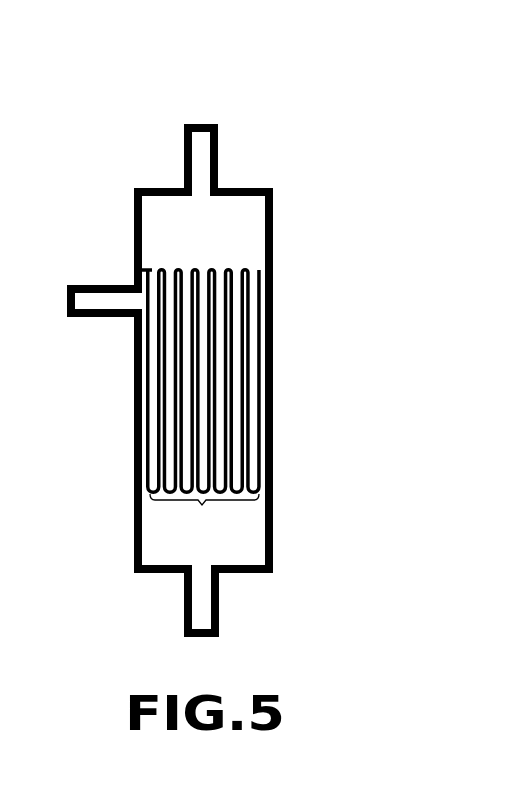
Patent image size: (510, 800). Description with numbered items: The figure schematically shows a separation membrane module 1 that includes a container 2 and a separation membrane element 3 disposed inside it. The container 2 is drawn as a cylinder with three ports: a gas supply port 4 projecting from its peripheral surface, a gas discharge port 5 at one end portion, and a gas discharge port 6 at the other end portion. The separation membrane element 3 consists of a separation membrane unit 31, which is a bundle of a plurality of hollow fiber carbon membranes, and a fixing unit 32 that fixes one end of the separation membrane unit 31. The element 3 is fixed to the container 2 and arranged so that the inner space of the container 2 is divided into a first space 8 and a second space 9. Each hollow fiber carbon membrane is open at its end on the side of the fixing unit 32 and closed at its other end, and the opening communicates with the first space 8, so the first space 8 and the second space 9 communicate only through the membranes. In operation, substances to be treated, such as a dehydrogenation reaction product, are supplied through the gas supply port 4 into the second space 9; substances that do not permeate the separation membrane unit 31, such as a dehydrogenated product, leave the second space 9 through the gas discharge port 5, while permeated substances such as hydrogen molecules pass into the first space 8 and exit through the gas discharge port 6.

The separation membrane module 1 is at (94, 137).
The container 2 is at (277, 194).
The separation membrane element 3 is at (230, 332).
The gas supply port 4 is at (102, 317).
The gas discharge port 5 is at (224, 617).
The gas discharge port 6 is at (180, 160).
The first space 8 is at (160, 210).
The second space 9 is at (163, 549).
The separation membrane unit 31 is at (204, 514).
The fixing unit 32 is at (147, 268).